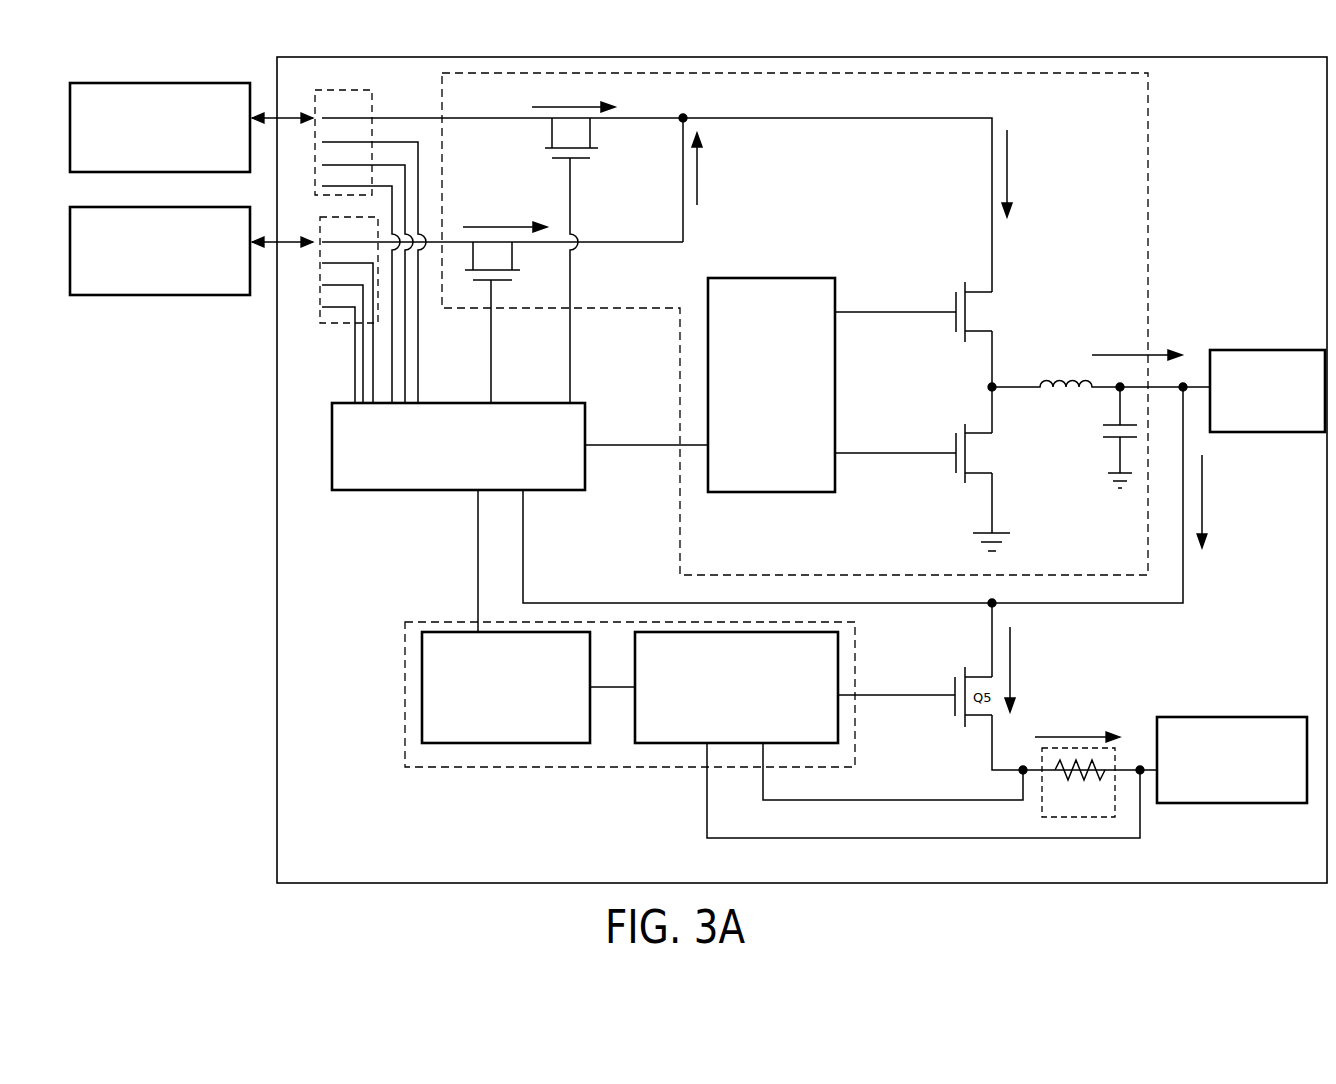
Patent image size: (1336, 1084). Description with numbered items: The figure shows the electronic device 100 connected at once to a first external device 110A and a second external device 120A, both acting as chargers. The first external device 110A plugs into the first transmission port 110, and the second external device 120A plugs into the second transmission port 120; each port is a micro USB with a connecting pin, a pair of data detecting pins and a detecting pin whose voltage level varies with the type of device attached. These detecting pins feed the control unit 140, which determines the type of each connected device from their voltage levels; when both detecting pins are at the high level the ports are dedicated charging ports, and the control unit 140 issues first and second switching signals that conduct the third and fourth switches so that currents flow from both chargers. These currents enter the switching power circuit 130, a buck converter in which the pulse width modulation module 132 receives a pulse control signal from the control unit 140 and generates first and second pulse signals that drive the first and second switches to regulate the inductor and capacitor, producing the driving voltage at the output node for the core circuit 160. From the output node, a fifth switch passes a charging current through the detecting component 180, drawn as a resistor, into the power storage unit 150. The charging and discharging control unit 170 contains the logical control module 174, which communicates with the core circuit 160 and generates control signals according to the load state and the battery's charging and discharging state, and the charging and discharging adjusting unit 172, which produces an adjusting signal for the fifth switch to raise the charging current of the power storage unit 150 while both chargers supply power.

The electronic device 100 is at (277, 570).
The first transmission port 110 is at (355, 89).
The first external device 110A is at (188, 167).
The second transmission port 120 is at (350, 323).
The second external device 120A is at (188, 291).
The switching power circuit 130 is at (1148, 280).
The pulse width modulation module 132 is at (790, 411).
The control unit 140 is at (475, 469).
The power storage unit 150 is at (1273, 772).
The core circuit 160 is at (1287, 426).
The charging and discharging control unit 170 is at (405, 660).
The charging and discharging adjusting unit 172 is at (753, 737).
The logical control module 174 is at (523, 732).
The detecting component 180 is at (1082, 818).